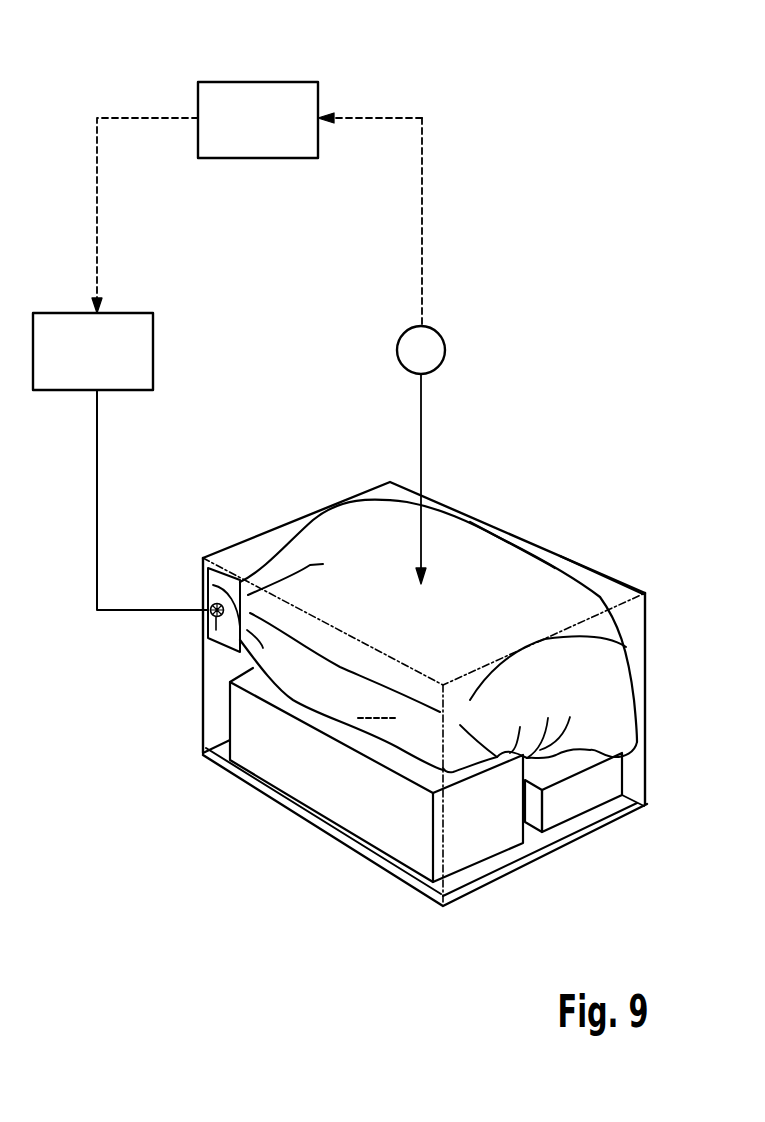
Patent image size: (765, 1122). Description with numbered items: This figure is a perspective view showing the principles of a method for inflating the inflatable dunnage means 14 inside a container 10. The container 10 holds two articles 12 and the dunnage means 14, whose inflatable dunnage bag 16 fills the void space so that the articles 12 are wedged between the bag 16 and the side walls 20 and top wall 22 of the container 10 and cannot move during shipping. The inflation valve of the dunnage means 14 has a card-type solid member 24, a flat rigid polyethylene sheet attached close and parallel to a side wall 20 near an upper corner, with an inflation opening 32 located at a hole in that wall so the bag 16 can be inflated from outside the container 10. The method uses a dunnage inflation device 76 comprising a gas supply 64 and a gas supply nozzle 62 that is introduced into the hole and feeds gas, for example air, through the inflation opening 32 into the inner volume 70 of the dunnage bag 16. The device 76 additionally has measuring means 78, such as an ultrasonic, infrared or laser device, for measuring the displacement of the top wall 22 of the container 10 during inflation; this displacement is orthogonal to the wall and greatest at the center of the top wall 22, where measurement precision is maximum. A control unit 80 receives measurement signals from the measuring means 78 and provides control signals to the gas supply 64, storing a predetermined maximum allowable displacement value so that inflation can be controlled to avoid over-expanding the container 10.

The container 10 is at (645, 611).
The article 12 is at (405, 835).
The inflated dunnage means 14 is at (621, 672).
The inflatable dunnage bag 16 is at (534, 572).
The side wall 20 is at (632, 806).
The top wall 22 is at (613, 590).
The solid member 24 is at (219, 645).
The inflation opening 32 is at (213, 602).
The gas supply nozzle 62 is at (168, 612).
The gas supply 64 is at (153, 353).
The inner volume 70 is at (355, 719).
The dunnage inflation device 76 is at (365, 105).
The measuring means 78 is at (446, 351).
The control unit 80 is at (246, 80).